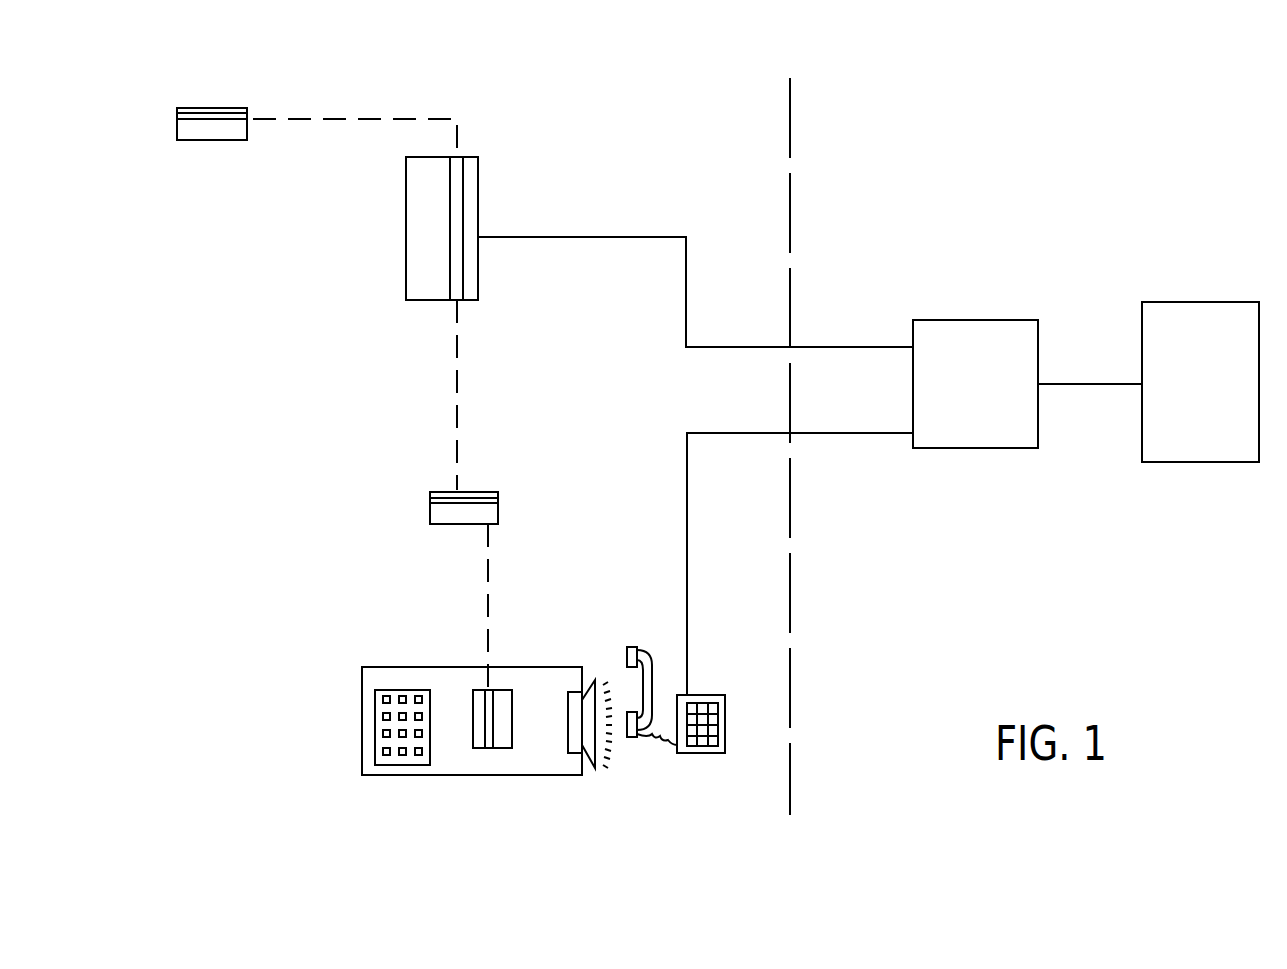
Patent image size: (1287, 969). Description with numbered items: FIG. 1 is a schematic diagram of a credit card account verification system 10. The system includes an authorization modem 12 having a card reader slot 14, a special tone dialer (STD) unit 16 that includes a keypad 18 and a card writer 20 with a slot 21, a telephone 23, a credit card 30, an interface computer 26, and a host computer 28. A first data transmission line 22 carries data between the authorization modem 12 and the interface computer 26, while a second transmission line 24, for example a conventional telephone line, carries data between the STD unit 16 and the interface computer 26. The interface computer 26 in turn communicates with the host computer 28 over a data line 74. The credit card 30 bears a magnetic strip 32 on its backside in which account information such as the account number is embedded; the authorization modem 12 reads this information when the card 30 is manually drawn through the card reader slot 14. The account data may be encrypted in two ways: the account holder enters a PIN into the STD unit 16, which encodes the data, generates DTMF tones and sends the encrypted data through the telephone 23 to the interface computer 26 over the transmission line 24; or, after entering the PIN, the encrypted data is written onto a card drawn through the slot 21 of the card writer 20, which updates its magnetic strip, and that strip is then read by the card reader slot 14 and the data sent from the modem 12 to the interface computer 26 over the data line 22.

The credit card account verification system 10 is at (865, 95).
The authorization modem 12 is at (406, 195).
The card reader slot 14 is at (464, 175).
The special tone dialer (STD) unit 16 is at (362, 762).
The keypad 18 is at (375, 716).
The card writer 20 is at (498, 748).
The slot 21 is at (493, 710).
The first data transmission line 22 is at (651, 237).
The telephone 23 is at (698, 753).
The second transmission line 24 is at (687, 497).
The interface computer 26 is at (966, 320).
The host computer 28 is at (1212, 302).
The credit card 30 is at (228, 140).
The magnetic strip 32 is at (177, 113).
The data line 74 is at (1104, 385).